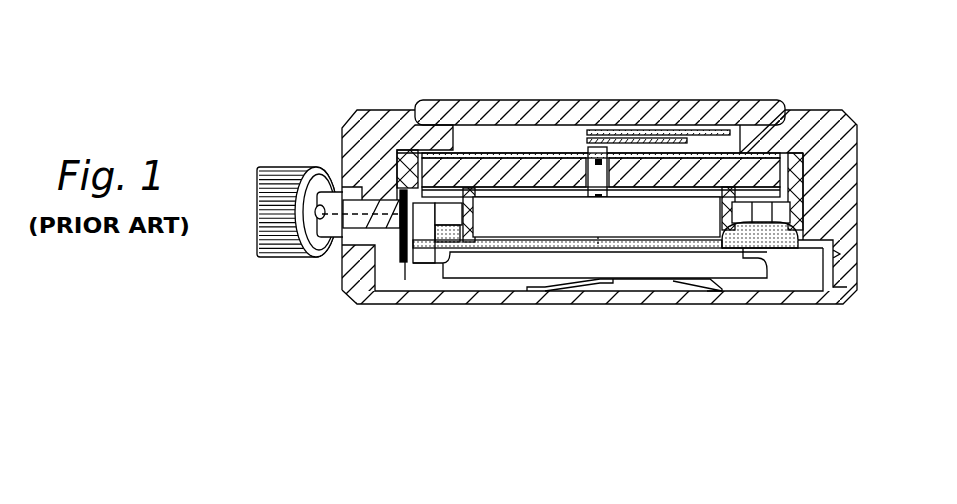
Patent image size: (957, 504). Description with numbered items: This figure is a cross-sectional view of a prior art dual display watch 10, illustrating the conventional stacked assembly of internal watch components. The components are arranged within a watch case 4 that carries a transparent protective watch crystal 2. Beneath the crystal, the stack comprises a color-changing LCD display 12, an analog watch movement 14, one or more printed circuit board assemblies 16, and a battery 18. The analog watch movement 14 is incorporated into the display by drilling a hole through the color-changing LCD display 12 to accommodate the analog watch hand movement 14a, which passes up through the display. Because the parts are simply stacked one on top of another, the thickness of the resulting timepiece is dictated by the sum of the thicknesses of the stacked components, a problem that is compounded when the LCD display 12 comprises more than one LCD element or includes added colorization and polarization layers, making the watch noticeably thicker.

The prior art dual display watch 10 is at (336, 62).
The transparent protective watch crystal 2 is at (472, 113).
The watch case 4 is at (838, 132).
The color-changing LCD display 12 is at (721, 172).
The analog watch movement 14 is at (537, 218).
The analog watch hand movement 14a is at (598, 150).
The printed circuit board (PCB) assembly 16 is at (603, 243).
The battery 18 is at (651, 268).